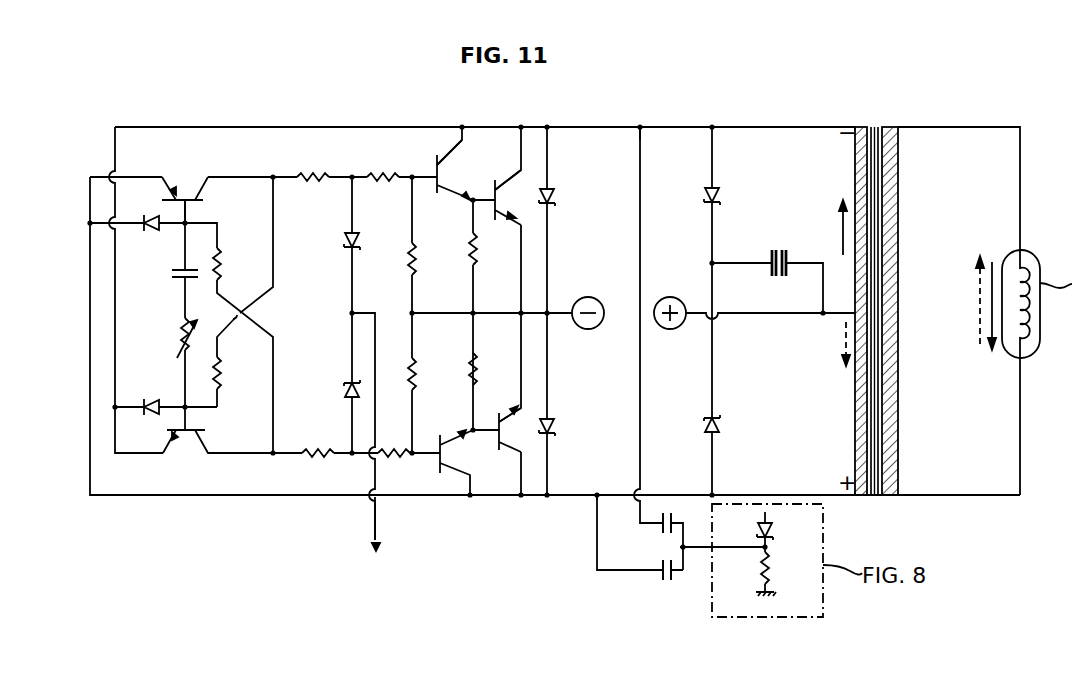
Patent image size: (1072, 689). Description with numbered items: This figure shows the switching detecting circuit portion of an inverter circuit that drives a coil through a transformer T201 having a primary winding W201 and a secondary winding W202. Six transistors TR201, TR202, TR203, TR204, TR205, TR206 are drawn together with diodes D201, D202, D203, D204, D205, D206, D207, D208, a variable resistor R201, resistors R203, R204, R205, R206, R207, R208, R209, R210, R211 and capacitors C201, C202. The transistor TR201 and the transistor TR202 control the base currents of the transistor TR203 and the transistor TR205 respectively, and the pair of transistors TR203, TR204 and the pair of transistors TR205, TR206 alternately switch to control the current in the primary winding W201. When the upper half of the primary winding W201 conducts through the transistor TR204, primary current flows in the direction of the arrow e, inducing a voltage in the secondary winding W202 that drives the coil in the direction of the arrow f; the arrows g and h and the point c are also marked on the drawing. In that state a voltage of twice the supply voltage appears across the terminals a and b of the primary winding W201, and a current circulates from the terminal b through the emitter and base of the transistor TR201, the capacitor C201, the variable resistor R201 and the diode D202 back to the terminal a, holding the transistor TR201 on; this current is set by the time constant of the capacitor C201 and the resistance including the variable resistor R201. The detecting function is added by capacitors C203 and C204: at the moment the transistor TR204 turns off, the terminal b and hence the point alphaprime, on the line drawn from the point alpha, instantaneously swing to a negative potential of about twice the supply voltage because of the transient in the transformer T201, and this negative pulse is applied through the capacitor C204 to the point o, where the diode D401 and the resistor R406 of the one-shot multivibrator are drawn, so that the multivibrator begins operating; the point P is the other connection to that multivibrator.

The transistor TR201 is at (187, 198).
The transistor TR202 is at (187, 437).
The transistor TR203 is at (448, 158).
The transistor TR204 is at (505, 190).
The transistor TR205 is at (452, 452).
The transistor TR206 is at (505, 433).
The diode D201 is at (150, 232).
The diode D202 is at (218, 252).
The diode D203 is at (350, 243).
The diode D204 is at (345, 388).
The diode D205 is at (558, 197).
The diode D206 is at (560, 417).
The diode D207 is at (720, 195).
The diode D208 is at (720, 425).
The variable resistor R201 is at (180, 334).
The resistor R203 is at (222, 378).
The resistor R204 is at (309, 183).
The resistor R205 is at (375, 176).
The resistor R206 is at (316, 450).
The resistor R207 is at (392, 456).
The resistor R208 is at (413, 258).
The resistor R209 is at (413, 375).
The resistor R210 is at (470, 247).
The resistor R211 is at (473, 366).
The capacitor C201 is at (178, 280).
The capacitor C202 is at (776, 248).
The capacitor C203 is at (660, 527).
The capacitor C204 is at (667, 580).
The primary winding W201 is at (855, 150).
The secondary winding W202 is at (893, 166).
The transformer T201 is at (874, 127).
The diode D401 is at (771, 533).
The resistor R406 is at (758, 578).
The terminal a is at (855, 127).
The terminal b is at (857, 496).
The terminal c is at (855, 313).
The arrow e is at (840, 230).
The arrow f is at (992, 260).
The current direction g is at (844, 338).
The current direction h is at (978, 283).
The point o is at (684, 542).
The point P is at (376, 537).
The terminal alpha is at (640, 127).
The point alphaprime is at (579, 512).